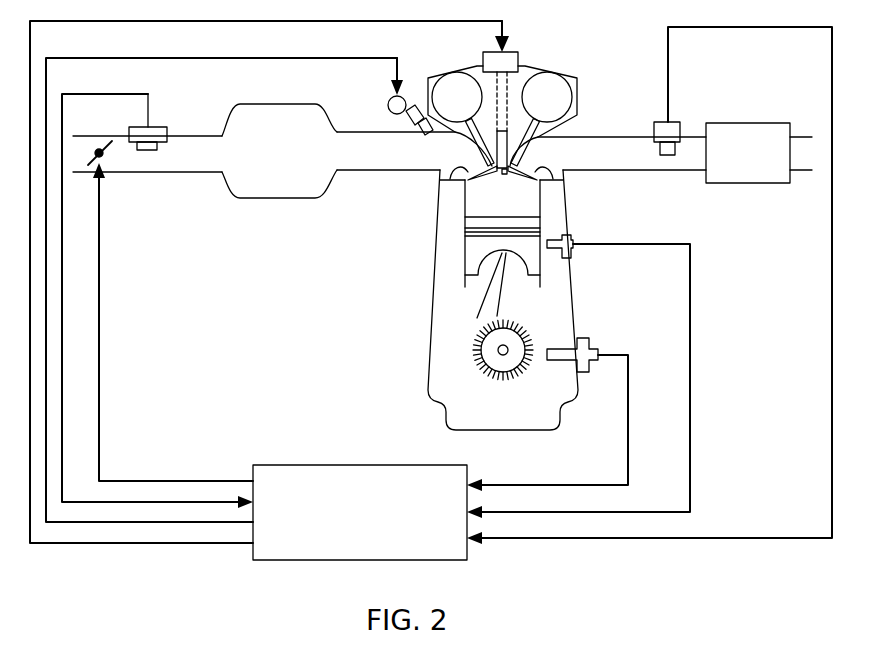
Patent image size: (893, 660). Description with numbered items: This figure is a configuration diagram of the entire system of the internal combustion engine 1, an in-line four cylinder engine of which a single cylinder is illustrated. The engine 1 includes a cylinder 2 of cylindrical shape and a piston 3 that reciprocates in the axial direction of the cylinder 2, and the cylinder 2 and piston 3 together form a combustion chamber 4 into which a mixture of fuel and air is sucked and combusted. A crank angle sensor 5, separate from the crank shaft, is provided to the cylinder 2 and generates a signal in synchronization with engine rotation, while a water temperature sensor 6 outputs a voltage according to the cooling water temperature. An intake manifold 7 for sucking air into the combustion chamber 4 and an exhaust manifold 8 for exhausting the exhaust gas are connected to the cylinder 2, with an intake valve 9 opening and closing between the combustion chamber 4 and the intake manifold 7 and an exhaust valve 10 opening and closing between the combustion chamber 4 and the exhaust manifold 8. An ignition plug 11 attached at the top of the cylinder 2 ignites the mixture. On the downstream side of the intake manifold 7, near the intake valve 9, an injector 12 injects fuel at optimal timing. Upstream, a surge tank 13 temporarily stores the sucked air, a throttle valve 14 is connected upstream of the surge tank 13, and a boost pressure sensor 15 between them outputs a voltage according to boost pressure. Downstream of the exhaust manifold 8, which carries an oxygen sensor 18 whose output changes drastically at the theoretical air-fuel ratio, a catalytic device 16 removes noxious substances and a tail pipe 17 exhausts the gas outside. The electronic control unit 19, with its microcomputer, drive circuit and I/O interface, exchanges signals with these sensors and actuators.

The internal combustion engine 1 is at (530, 63).
The cylinder 2 is at (542, 266).
The piston 3 is at (472, 250).
The combustion chamber 4 is at (472, 203).
The crank angle sensor 5 is at (586, 338).
The water temperature sensor 6 is at (568, 235).
The intake manifold 7 is at (410, 172).
The exhaust manifold 8 is at (628, 170).
The intake valve 9 is at (456, 86).
The exhaust valve 10 is at (551, 80).
The ignition plug 11 is at (506, 173).
The injector 12 is at (390, 104).
The surge tank 13 is at (288, 198).
The throttle valve 14 is at (103, 156).
The boost pressure sensor 15 is at (167, 129).
The catalytic device 16 is at (750, 123).
The tail pipe 17 is at (812, 170).
The oxygen sensor 18 is at (654, 122).
The electronic control unit 19 is at (300, 465).